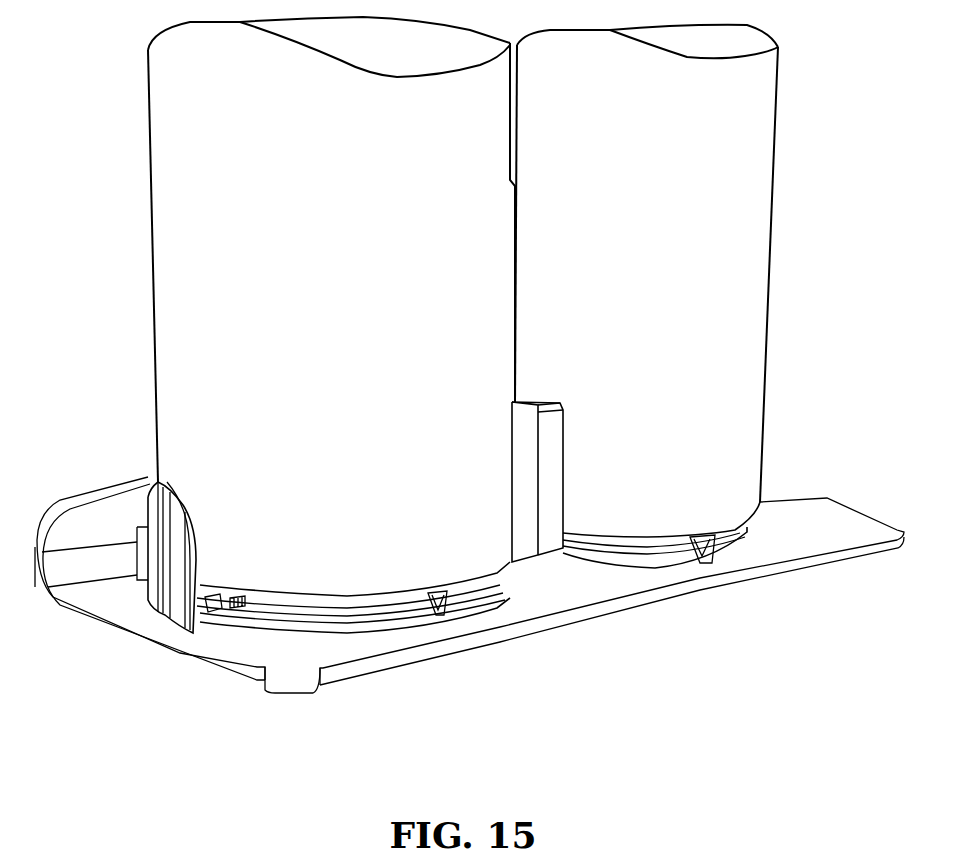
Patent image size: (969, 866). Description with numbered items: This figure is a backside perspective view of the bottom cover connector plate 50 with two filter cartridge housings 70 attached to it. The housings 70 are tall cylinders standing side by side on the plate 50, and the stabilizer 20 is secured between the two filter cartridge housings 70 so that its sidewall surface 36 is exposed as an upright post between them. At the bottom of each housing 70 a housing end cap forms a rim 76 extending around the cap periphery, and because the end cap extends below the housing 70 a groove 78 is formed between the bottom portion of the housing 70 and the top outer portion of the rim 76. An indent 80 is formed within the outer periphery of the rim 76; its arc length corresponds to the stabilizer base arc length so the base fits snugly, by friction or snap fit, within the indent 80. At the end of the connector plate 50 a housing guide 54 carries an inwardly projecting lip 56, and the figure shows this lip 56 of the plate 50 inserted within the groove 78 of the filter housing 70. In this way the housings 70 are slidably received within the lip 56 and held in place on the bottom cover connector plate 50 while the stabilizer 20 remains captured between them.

The filter cartridge housing 70 is at (365, 315).
The stabilizer 20 is at (567, 482).
The sidewall surface 36 is at (550, 497).
The bottom cover connector plate 50 is at (98, 625).
The housing guide 54 is at (157, 507).
The inwardly projecting lip 56 is at (217, 597).
The rim 76 is at (373, 640).
The groove 78 is at (397, 603).
The indent 80 is at (230, 607).